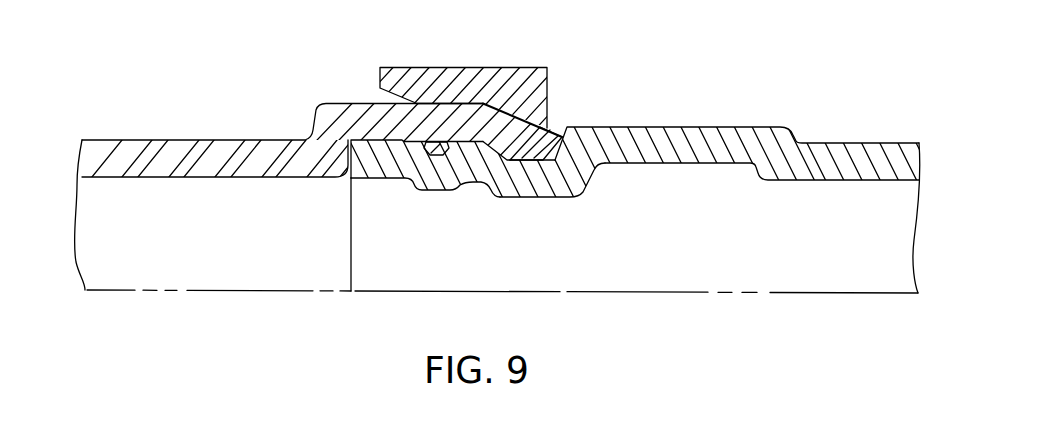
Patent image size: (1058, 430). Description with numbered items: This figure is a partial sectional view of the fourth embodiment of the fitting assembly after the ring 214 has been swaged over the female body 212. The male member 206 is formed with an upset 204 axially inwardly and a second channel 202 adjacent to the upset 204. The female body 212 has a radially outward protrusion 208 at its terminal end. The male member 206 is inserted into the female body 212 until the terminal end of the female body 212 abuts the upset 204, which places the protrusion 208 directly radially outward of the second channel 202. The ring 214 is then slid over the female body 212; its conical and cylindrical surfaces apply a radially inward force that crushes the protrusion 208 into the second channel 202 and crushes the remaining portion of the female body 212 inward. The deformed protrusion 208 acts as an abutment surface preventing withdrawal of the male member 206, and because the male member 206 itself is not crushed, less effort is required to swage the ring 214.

The second channel 202 is at (533, 195).
The upset 204 is at (673, 125).
The male member 206 is at (473, 161).
The radially outward protrusion 208 is at (553, 128).
The female body 212 is at (353, 102).
The ring 214 is at (485, 68).